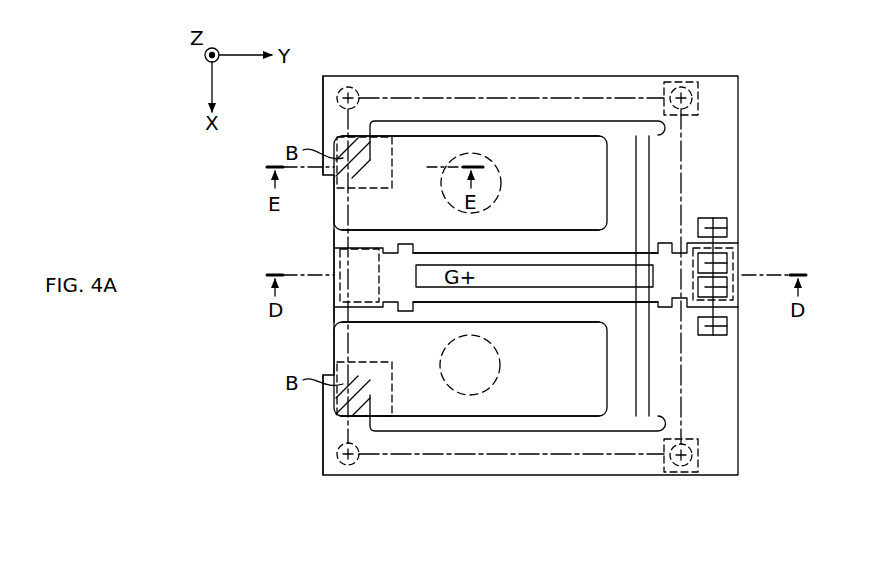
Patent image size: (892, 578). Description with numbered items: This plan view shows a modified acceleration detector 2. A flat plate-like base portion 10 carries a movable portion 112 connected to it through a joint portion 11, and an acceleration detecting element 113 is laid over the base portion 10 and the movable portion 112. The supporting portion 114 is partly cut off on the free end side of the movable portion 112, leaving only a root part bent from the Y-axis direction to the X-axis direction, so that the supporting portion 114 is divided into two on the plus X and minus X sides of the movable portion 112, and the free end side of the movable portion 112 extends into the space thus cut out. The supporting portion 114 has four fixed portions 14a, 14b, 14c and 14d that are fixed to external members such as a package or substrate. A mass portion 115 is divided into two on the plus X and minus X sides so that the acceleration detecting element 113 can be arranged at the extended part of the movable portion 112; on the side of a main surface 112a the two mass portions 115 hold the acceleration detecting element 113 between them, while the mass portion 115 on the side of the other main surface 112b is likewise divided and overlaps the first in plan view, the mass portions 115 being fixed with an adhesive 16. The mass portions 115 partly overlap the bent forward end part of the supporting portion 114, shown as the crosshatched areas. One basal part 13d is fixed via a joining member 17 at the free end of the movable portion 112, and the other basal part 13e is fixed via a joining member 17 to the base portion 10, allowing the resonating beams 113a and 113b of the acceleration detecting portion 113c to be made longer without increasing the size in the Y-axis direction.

The acceleration detector 2 is at (722, 60).
The base portion 10 is at (735, 352).
The joint portion 11 is at (647, 393).
The basal part 13d is at (336, 240).
The basal part 13e is at (730, 243).
The fixed portion 14a is at (347, 87).
The fixed portion 14b is at (681, 87).
The fixed portion 14c is at (682, 467).
The fixed portion 14d is at (347, 466).
The adhesive 16 is at (473, 153).
The joining member 17 is at (338, 267).
The movable portion 112 is at (622, 120).
The main surface 112a is at (618, 406).
The main surface 112b is at (627, 406).
The acceleration detecting element 113 is at (573, 279).
The resonating beam 113a is at (540, 251).
The resonating beam 113b is at (537, 302).
The acceleration detecting portion 113c is at (576, 305).
The supporting portion 114 is at (323, 115).
The mass portion 115 is at (522, 148).